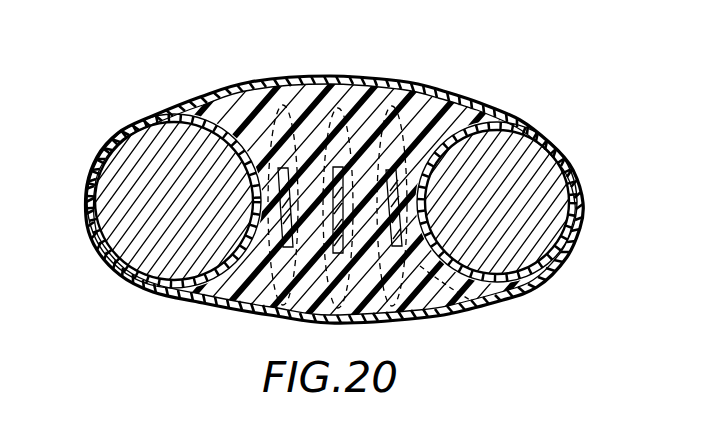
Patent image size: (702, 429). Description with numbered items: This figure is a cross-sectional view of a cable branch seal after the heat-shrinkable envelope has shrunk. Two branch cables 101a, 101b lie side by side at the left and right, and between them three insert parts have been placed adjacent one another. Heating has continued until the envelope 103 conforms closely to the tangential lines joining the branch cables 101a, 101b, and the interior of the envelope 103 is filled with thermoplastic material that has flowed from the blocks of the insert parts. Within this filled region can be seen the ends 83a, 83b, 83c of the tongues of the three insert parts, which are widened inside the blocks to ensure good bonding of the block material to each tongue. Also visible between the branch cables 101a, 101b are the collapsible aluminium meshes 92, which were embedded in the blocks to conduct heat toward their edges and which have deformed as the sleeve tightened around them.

The branch cable 101a is at (118, 169).
The branch cable 101b is at (550, 195).
The envelope 103 is at (514, 128).
The end of tongue 83a is at (266, 80).
The end of tongue 83b is at (335, 78).
The end of tongue 83c is at (403, 80).
The collapsible meshes 92 is at (432, 306).